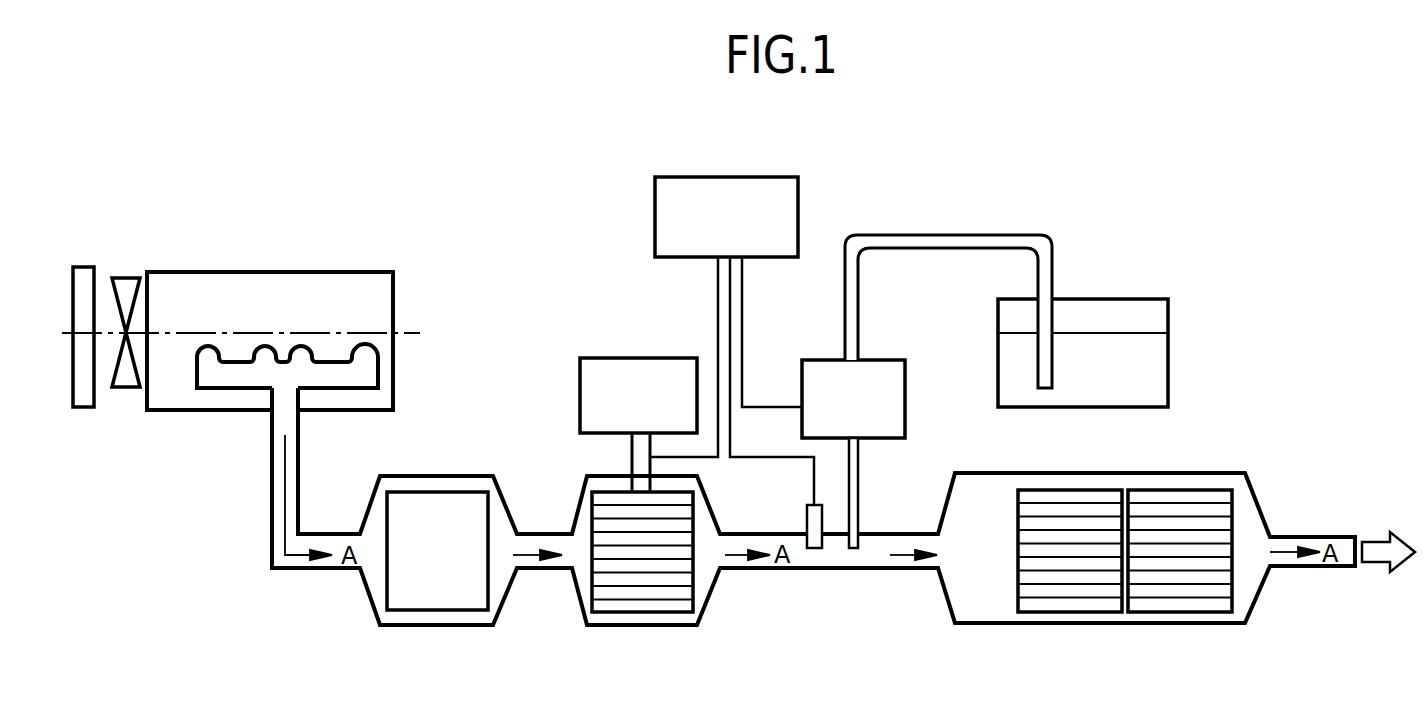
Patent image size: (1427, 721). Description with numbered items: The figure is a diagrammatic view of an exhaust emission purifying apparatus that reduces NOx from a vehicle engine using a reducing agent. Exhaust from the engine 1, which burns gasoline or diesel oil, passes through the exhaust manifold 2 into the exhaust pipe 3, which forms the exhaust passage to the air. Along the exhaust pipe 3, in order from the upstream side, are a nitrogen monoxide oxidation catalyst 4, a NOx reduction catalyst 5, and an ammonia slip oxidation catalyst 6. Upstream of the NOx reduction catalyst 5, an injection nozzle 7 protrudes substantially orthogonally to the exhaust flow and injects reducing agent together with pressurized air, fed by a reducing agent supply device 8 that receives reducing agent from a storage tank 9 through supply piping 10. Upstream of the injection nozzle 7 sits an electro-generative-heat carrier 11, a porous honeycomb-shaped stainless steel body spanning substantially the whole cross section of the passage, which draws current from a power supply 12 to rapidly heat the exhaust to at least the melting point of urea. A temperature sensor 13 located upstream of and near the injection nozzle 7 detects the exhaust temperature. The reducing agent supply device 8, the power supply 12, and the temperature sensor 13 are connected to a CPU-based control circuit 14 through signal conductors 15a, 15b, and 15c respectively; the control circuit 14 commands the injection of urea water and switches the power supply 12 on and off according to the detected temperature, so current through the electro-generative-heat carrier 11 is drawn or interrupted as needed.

The engine 1 is at (223, 272).
The exhaust manifold 2 is at (378, 365).
The exhaust pipe 3 is at (750, 568).
The nitrogen monoxide oxidation catalyst 4 is at (460, 610).
The NOx reduction catalyst 5 is at (1083, 612).
The ammonia slip oxidation catalyst 6 is at (1172, 612).
The injection nozzle 7 is at (852, 548).
The reducing agent supply device 8 is at (907, 385).
The storage tank 9 is at (1168, 378).
The supply piping 10 is at (858, 308).
The electro-generative-heat carrier 11 is at (667, 612).
The power supply 12 is at (580, 390).
The temperature sensor 13 is at (812, 548).
The control circuit 14 is at (655, 223).
The signal conductor 15a is at (742, 297).
The signal conductor 15b is at (718, 294).
The signal conductor 15c is at (755, 457).